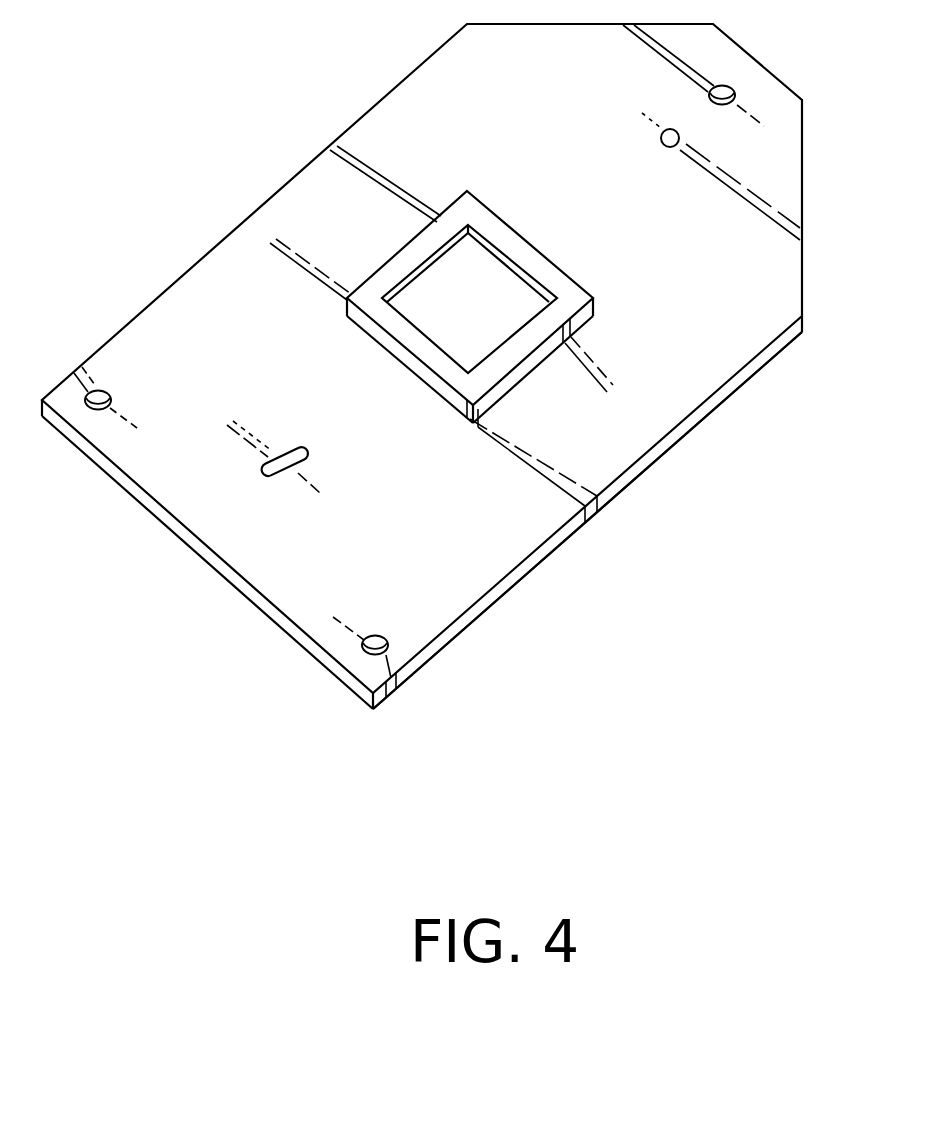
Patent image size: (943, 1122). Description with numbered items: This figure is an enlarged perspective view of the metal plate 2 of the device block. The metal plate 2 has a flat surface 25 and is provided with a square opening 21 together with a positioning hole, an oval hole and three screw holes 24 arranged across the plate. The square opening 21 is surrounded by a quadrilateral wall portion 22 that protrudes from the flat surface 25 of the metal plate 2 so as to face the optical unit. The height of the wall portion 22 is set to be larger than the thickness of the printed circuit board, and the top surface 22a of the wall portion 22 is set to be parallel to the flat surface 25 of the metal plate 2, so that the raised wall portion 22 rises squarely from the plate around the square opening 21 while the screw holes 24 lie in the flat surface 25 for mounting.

The metal plate 2 is at (266, 121).
The square opening 21 is at (502, 304).
The quadrilateral wall portion 22 is at (517, 378).
The top surface of the wall portion 22a is at (452, 383).
The screw holes 24 is at (724, 90).
The flat surface 25 is at (503, 538).